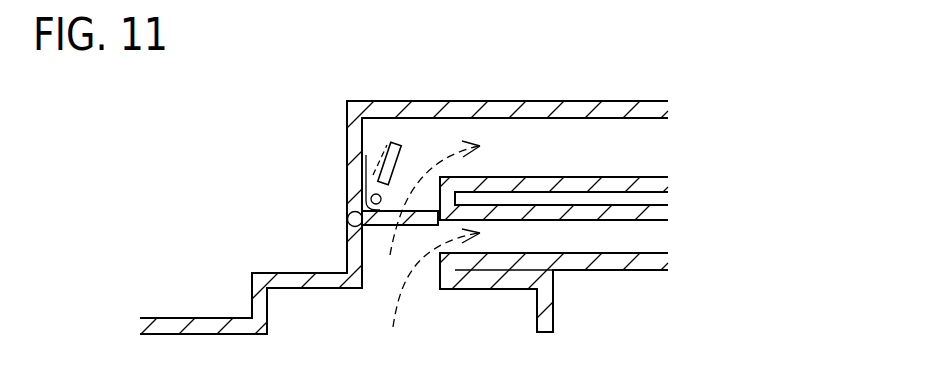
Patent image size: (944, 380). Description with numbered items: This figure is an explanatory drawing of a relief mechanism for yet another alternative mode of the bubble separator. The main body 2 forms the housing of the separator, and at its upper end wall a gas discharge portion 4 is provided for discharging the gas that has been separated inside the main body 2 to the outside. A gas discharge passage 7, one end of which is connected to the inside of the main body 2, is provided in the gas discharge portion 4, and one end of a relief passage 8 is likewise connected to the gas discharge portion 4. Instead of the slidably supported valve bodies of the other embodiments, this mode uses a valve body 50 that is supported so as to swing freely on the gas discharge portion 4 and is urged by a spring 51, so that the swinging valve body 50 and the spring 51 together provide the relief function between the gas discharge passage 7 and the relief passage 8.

The main body 2 is at (258, 297).
The gas discharge portion 4 is at (335, 223).
The gas discharge passage 7 is at (583, 225).
The relief passage 8 is at (594, 140).
The valve body 50 is at (388, 144).
The spring 51 is at (365, 180).